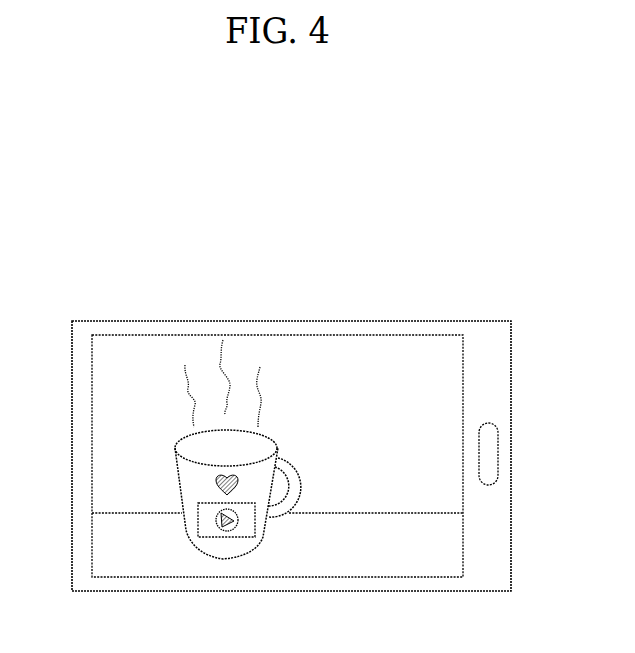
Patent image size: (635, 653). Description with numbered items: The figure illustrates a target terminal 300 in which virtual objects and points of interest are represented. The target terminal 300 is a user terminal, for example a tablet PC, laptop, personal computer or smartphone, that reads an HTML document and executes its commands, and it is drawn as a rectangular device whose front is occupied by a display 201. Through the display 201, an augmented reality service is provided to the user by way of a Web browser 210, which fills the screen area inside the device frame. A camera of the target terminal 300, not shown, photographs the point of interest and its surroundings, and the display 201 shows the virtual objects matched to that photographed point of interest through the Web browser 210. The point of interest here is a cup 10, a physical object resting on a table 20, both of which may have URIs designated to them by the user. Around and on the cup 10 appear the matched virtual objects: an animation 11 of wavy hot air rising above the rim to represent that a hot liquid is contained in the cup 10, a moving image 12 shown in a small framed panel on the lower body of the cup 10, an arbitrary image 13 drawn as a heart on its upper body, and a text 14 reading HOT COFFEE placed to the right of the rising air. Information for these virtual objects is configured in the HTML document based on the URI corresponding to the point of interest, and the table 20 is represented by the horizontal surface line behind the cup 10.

The target terminal 300 is at (482, 320).
The display 201 is at (465, 357).
The Web browser 210 is at (450, 392).
The cup 10 is at (302, 488).
The animation 11 is at (263, 378).
The moving image 12 is at (255, 530).
The arbitrary image 13 is at (215, 485).
The text 14 is at (388, 430).
The table 20 is at (100, 542).